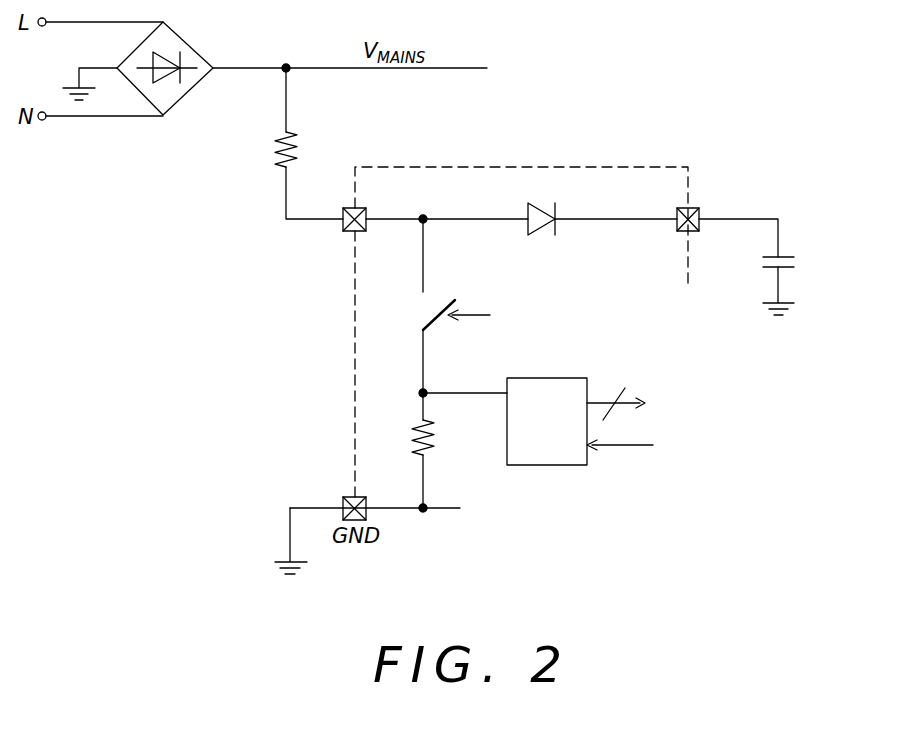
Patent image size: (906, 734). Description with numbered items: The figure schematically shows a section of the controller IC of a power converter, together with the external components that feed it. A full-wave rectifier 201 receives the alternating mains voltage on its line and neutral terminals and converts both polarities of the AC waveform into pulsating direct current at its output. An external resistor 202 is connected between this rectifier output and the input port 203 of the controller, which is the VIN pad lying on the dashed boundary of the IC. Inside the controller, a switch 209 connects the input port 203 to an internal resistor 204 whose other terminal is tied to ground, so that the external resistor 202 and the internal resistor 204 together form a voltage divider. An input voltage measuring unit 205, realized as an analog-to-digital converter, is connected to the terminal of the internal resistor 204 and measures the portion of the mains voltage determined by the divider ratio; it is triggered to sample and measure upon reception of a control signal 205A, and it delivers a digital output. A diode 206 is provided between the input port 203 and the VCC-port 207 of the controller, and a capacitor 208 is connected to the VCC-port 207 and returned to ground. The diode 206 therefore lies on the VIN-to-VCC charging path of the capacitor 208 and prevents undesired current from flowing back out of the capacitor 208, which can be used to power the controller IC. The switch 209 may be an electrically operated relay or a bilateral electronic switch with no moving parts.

The full-wave rectifier 201 is at (187, 38).
The external resistor 202 is at (267, 147).
The input port 203 is at (338, 229).
The internal resistor 204 is at (412, 433).
The input voltage measuring unit 205 is at (587, 465).
The control signal 205A is at (635, 438).
The diode 206 is at (535, 238).
The VCC-port 207 is at (710, 188).
The capacitor 208 is at (828, 282).
The switch 209 is at (412, 310).